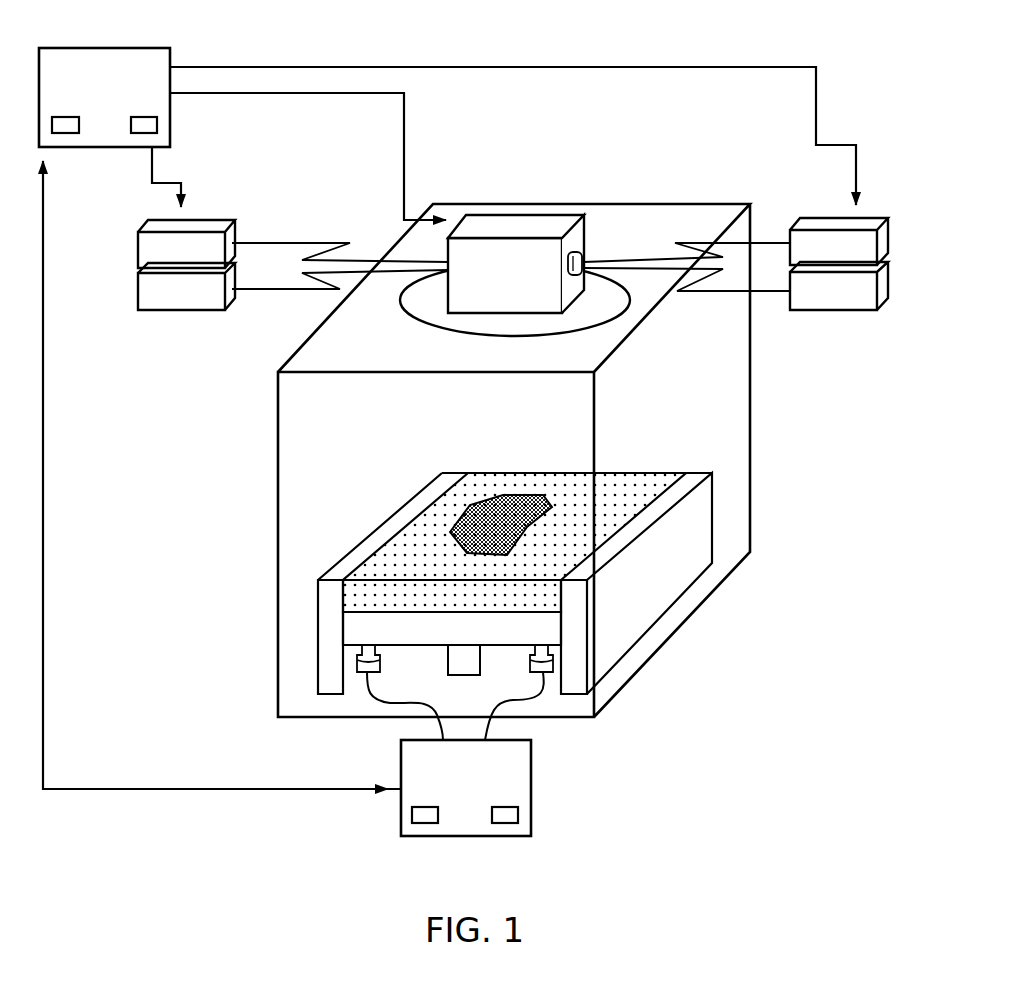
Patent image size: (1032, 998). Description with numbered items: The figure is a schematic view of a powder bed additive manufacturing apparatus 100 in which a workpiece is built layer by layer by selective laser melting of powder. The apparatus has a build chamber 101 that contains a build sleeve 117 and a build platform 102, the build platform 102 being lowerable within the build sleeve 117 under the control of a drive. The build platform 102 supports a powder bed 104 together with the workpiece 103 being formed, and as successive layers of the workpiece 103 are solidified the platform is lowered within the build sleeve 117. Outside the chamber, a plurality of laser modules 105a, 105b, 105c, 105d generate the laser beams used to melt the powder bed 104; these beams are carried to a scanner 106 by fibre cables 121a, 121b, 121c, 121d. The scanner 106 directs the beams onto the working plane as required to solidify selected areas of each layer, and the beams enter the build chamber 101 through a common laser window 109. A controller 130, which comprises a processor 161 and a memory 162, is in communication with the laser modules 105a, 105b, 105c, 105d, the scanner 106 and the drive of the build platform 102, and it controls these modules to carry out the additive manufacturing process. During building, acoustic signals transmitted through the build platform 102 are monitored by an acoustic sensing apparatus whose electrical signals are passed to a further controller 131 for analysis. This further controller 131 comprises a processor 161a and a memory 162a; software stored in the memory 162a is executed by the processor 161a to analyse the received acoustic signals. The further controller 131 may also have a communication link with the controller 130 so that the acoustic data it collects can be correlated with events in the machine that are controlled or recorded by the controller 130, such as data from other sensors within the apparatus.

The additive manufacturing apparatus 100 is at (702, 111).
The build chamber 101 is at (296, 526).
The build platform 102 is at (552, 632).
The workpiece 103 is at (462, 516).
The powder bed 104 is at (548, 593).
The laser module 105a is at (137, 245).
The laser module 105b is at (137, 290).
The laser module 105c is at (889, 245).
The laser module 105d is at (886, 287).
The scanner 106 is at (518, 227).
The common laser window 109 is at (432, 306).
The build sleeve 117 is at (325, 613).
The fibre cable 121a is at (333, 222).
The fibre cable 121b is at (252, 315).
The fibre cable 121c is at (777, 205).
The fibre cable 121d is at (721, 306).
The controller 130 is at (130, 112).
The further controller 131 is at (490, 802).
The processor 161 is at (57, 114).
The memory 162 is at (158, 126).
The processor 161a is at (412, 813).
The memory 162a is at (518, 813).